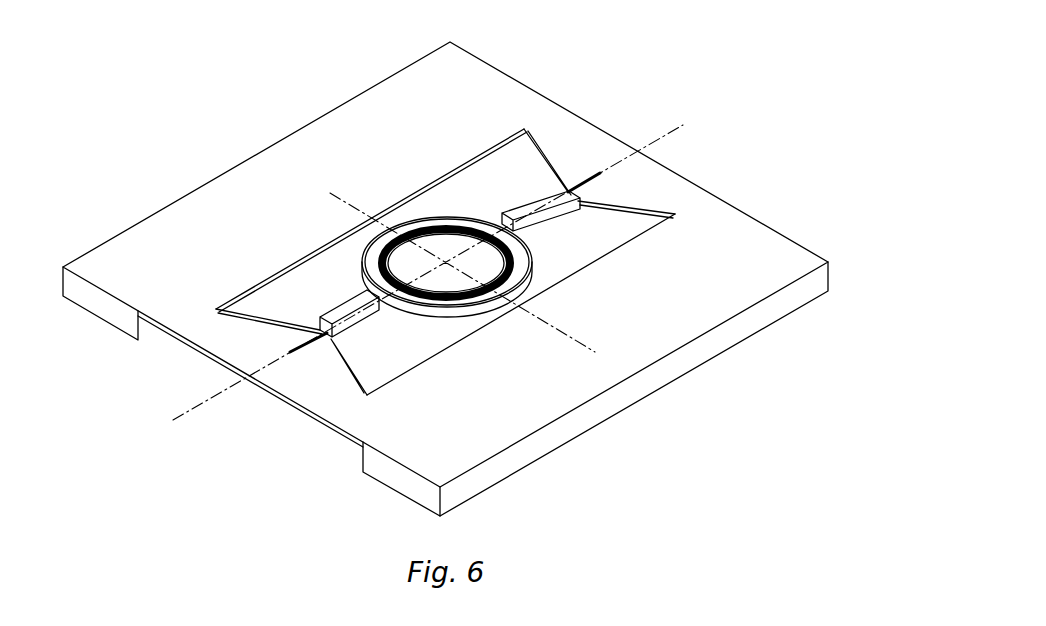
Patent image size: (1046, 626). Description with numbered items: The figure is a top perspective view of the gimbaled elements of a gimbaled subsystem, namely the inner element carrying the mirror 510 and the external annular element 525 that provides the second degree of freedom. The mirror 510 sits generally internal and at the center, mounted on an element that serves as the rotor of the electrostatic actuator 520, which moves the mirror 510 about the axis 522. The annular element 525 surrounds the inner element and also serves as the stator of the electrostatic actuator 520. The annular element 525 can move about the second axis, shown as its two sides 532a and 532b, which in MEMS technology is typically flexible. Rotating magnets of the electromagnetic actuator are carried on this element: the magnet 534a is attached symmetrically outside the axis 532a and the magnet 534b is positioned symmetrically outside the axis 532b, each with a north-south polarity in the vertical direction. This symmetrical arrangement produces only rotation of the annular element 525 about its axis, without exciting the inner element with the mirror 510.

The mirror 510 is at (454, 253).
The electrostatic actuator 520 is at (368, 258).
The axis 522 is at (403, 242).
The annular element 525 is at (518, 245).
The axis 532a is at (590, 173).
The axis 532b is at (307, 337).
The magnet 534a is at (577, 202).
The magnet 534b is at (367, 313).